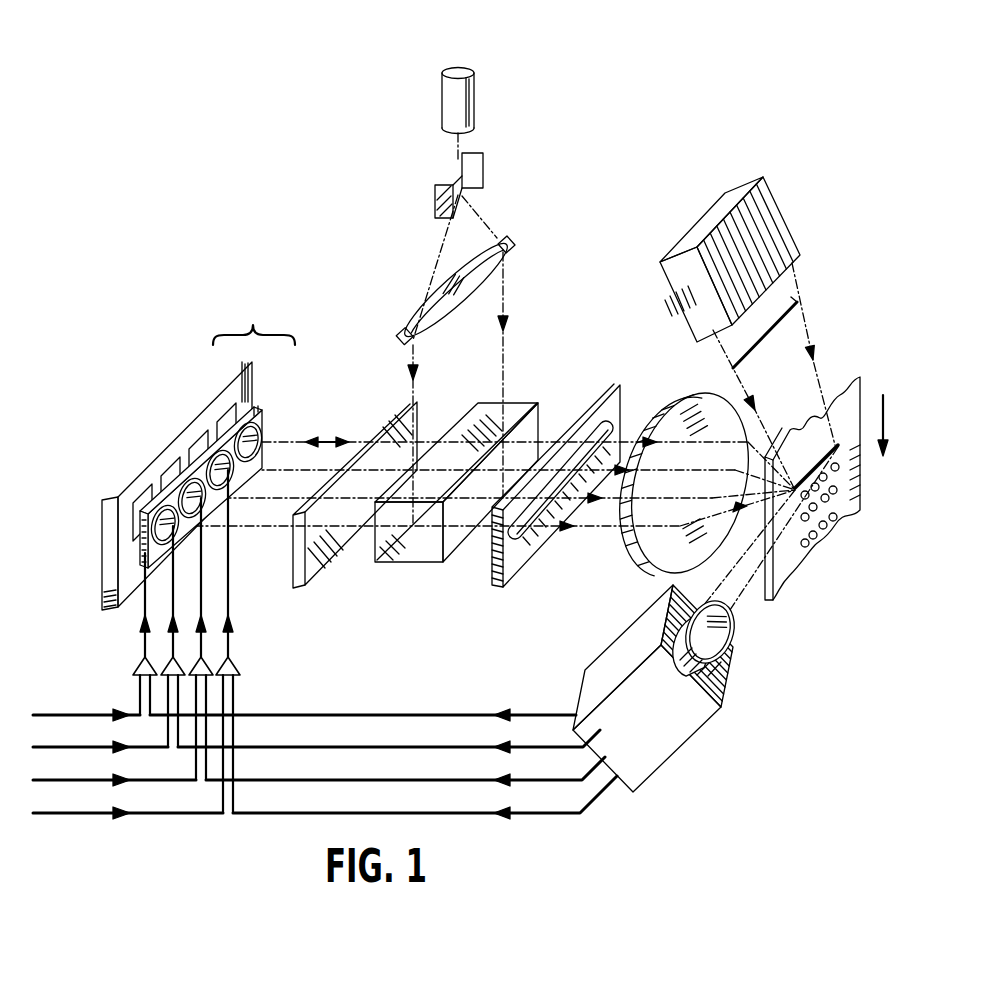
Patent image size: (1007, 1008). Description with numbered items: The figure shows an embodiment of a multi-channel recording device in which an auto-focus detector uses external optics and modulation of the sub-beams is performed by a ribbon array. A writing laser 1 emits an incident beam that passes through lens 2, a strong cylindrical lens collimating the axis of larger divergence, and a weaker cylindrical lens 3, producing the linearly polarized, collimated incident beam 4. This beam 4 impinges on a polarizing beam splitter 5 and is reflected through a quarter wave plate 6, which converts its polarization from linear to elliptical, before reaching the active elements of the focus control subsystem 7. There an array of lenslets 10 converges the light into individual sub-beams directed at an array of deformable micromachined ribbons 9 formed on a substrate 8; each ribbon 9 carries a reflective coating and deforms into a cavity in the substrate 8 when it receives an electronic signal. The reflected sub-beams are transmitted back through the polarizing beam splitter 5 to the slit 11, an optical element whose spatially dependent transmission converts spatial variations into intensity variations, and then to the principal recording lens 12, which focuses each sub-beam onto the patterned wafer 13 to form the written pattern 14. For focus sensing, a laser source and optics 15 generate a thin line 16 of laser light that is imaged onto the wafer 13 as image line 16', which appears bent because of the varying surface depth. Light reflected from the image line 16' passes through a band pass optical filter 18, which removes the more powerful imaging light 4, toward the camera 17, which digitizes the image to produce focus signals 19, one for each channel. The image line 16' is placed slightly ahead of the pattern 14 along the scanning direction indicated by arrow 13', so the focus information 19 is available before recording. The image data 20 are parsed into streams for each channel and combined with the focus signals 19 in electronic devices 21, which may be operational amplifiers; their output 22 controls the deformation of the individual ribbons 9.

The writing laser 1 is at (474, 100).
The lens 2 is at (483, 170).
The lens 3 is at (510, 244).
The incident beam 4 is at (506, 306).
The polarizing beam splitter 5 is at (413, 565).
The quarter wave plate 6 is at (391, 414).
The focus control subsystem 7 is at (203, 451).
The substrate 8 is at (207, 401).
The deformable micromachined ribbons 9 is at (172, 490).
The lenslet array 10 is at (262, 434).
The slit 11 is at (605, 382).
The principal recording lens 12 is at (663, 403).
The patterned wafer 13 is at (852, 465).
The arrow indicating scanning direction 13' is at (926, 425).
The written pattern 14 is at (858, 468).
The focus sensing laser source and optical elements 15 is at (768, 185).
The thin line of laser light 16 is at (801, 370).
The image line 16' is at (765, 495).
The camera 17 is at (707, 720).
The band pass optical filter 18 is at (733, 648).
The focus signals 19 is at (523, 817).
The image data 20 is at (212, 817).
The electronic devices 21 is at (241, 670).
The output signal 22 is at (235, 634).